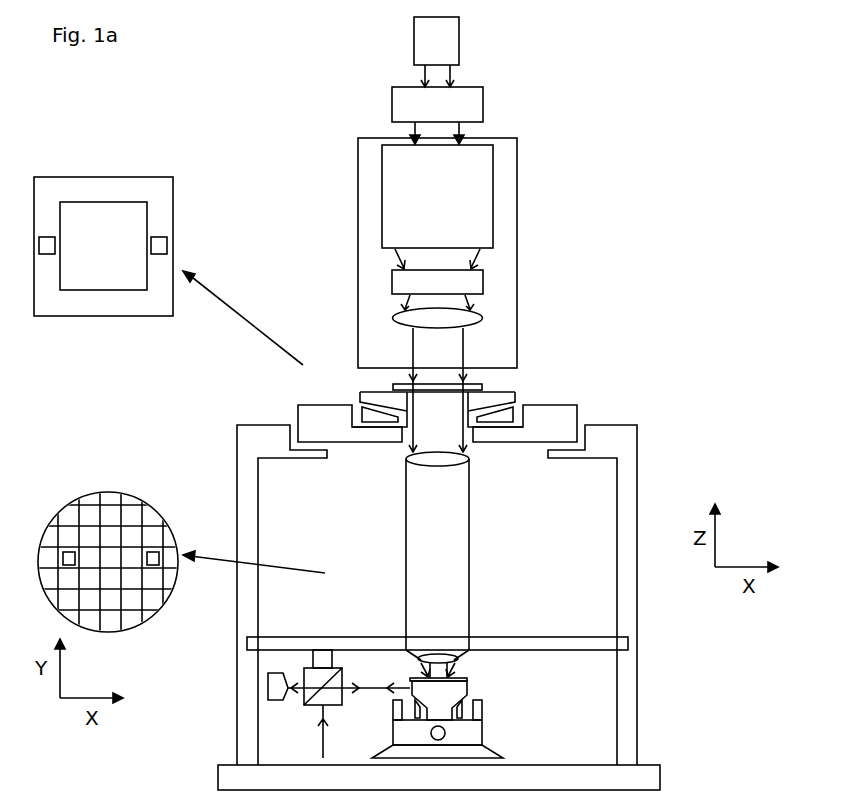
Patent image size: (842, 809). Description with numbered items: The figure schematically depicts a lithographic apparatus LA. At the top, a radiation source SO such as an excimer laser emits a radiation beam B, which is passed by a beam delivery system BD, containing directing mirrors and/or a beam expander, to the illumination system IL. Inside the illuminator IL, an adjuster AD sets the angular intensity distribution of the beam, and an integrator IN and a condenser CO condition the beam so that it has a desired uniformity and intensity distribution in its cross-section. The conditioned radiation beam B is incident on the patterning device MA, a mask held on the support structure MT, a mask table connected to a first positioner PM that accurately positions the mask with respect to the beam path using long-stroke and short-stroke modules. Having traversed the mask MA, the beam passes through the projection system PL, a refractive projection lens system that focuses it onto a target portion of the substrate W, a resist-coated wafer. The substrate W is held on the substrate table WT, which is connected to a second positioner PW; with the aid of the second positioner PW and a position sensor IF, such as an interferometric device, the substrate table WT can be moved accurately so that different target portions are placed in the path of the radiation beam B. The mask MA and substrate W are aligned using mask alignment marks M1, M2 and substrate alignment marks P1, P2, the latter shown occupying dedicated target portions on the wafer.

The radiation source SO is at (460, 44).
The beam delivery system BD is at (483, 108).
The illumination system IL is at (517, 160).
The adjuster AD is at (493, 205).
The integrator IN is at (483, 278).
The condenser CO is at (483, 318).
The lithographic apparatus LA is at (637, 263).
The patterning device MA is at (392, 386).
The mask alignment mark M1 is at (163, 237).
The mask alignment mark M2 is at (47, 237).
The radiation beam B is at (470, 387).
The support structure MT is at (515, 393).
The first positioner PM is at (298, 405).
The projection system PL is at (469, 542).
The substrate W is at (412, 678).
The substrate table WT is at (467, 685).
The second positioner PW is at (482, 736).
The position sensor IF is at (300, 707).
The substrate alignment mark P1 is at (69, 552).
The substrate alignment mark P2 is at (153, 552).